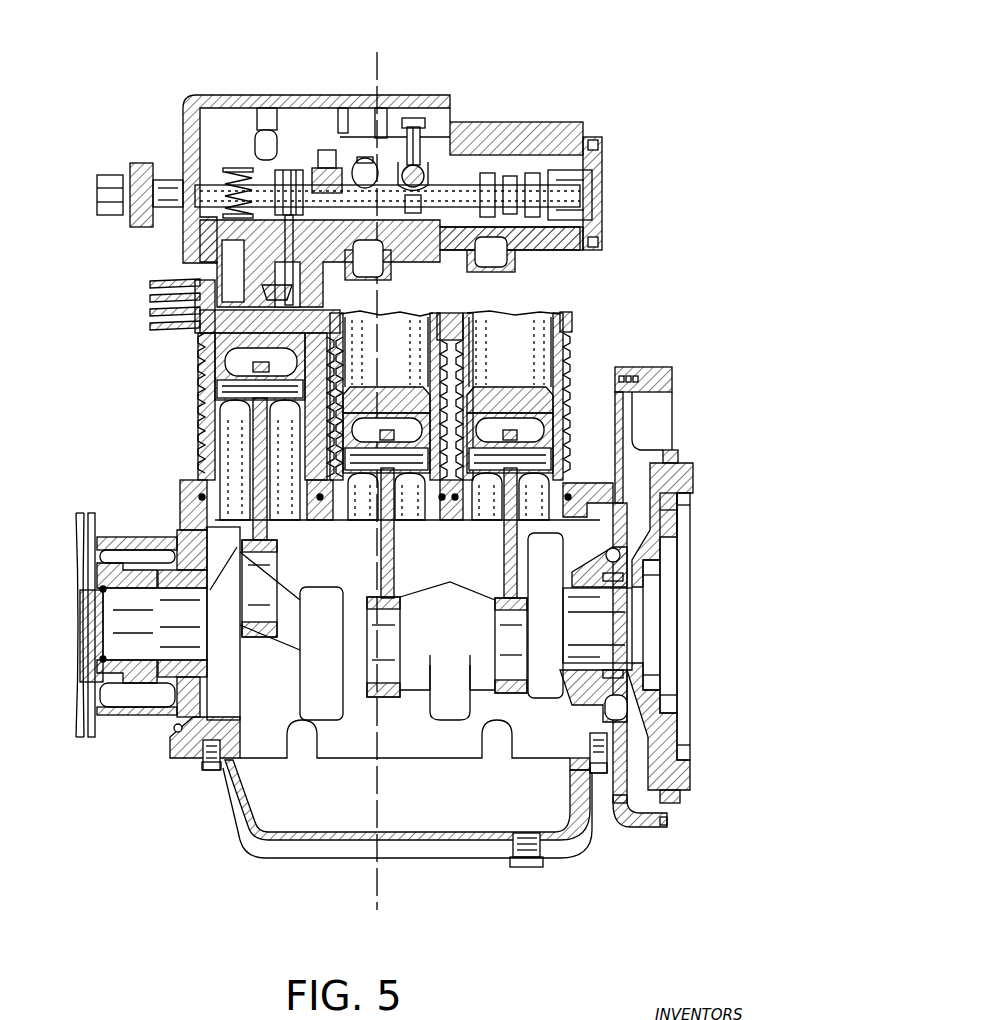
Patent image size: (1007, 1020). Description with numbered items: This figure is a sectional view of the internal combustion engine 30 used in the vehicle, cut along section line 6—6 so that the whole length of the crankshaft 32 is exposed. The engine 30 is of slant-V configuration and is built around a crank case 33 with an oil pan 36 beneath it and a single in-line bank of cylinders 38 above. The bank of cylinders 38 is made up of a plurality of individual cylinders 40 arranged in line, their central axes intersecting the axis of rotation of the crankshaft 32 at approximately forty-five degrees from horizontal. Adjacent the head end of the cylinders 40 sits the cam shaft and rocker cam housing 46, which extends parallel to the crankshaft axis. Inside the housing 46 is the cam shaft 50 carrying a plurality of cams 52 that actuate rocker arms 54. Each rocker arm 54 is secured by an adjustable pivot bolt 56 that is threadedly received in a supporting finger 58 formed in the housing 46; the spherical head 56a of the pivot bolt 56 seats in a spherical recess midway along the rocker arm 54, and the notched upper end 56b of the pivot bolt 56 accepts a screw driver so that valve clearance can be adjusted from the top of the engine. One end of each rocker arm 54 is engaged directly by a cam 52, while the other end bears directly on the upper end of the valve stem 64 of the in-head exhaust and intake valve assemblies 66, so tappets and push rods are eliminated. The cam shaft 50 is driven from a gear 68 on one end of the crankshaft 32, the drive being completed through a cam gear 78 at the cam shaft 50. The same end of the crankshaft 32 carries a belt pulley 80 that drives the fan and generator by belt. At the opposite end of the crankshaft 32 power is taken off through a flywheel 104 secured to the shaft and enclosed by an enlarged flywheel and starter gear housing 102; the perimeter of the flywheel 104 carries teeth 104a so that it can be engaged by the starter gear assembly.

The section line 6— 6 is at (368, 44).
The internal combustion engine 30 is at (256, 894).
The crankshaft 32 is at (618, 622).
The crank case 33 is at (193, 735).
The oil pan 36 is at (577, 840).
The bank of cylinders 38 is at (186, 404).
The cylinder 40 is at (208, 367).
The cam shaft and rocker cam housing 46 is at (432, 95).
The cam shaft 50 is at (468, 190).
The cam 52 is at (414, 200).
The rocker arm 54 is at (425, 172).
The pivot bolt 56 is at (422, 187).
The spherical head 56a is at (410, 192).
The upper end 56b is at (416, 128).
The supporting finger 58 is at (420, 143).
The valve stem 64 is at (287, 170).
The in-head exhaust and intake valve assemblies 66 is at (278, 292).
The gear 68 is at (143, 683).
The cam gear 78 is at (145, 163).
The belt pulley 80 is at (73, 540).
The flywheel and starter gear housing 102 is at (652, 362).
The flywheel 104 is at (680, 475).
The teeth 104a is at (680, 798).